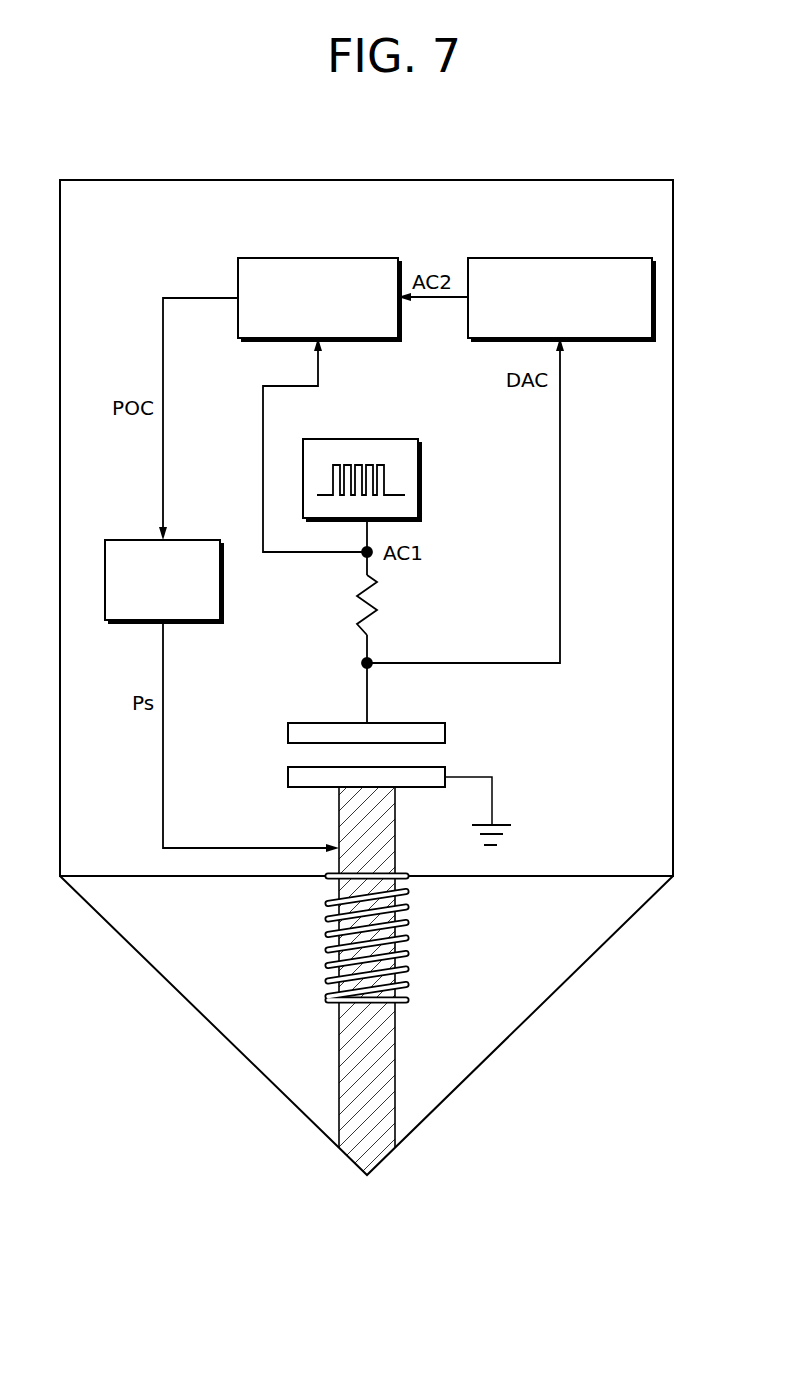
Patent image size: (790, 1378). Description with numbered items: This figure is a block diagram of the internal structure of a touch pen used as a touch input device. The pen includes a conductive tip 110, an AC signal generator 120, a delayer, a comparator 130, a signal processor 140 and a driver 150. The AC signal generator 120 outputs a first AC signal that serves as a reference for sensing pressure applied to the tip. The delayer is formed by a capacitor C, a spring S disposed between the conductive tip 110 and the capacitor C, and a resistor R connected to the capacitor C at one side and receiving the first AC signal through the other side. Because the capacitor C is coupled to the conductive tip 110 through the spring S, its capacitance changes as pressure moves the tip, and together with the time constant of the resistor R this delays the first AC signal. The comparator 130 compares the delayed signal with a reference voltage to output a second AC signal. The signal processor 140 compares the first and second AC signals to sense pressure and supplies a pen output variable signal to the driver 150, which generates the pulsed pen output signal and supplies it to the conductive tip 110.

The conductive tip 110 is at (383, 1028).
The alternating current (AC) signal generator 120 is at (381, 438).
The comparator 130 is at (562, 257).
The signal processor 140 is at (365, 257).
The driver 150 is at (194, 539).
The resistor R is at (356, 605).
The capacitor C is at (287, 733).
The spring S is at (312, 920).